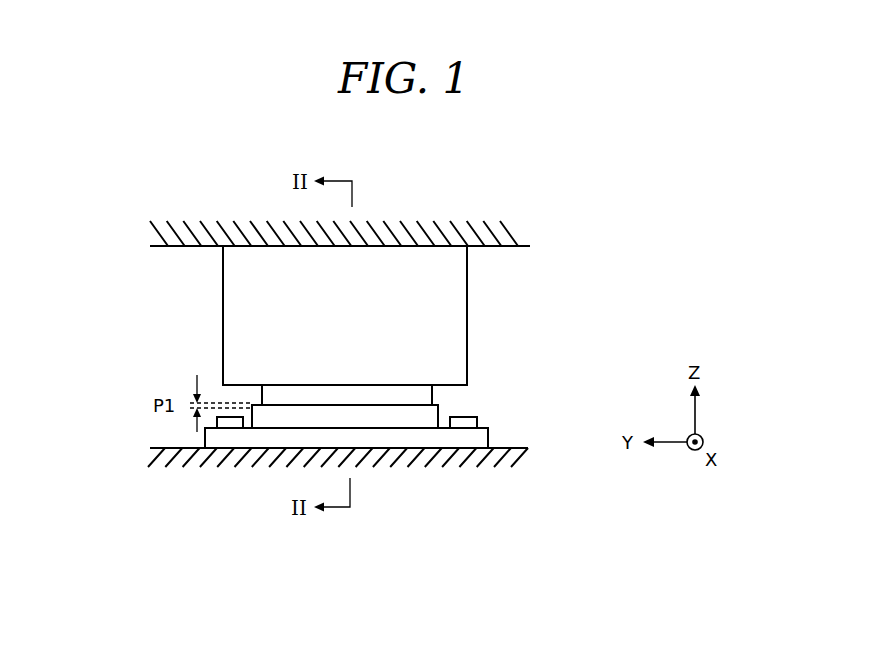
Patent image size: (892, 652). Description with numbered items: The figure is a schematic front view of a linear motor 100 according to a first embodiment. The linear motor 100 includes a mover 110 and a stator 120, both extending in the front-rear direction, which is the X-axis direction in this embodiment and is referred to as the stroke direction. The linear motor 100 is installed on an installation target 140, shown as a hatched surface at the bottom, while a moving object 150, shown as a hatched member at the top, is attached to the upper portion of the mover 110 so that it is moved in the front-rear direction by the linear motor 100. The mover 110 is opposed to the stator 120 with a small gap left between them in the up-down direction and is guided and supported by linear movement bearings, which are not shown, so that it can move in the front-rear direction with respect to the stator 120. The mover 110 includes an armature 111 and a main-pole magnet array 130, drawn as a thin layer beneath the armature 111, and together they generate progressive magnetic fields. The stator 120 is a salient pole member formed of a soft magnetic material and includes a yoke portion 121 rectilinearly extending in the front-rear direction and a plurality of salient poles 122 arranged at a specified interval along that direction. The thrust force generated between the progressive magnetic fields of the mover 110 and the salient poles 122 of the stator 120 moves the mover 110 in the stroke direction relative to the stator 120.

The linear motor 100 is at (583, 260).
The mover 110 is at (415, 325).
The armature 111 is at (445, 302).
The stator 120 is at (389, 470).
The yoke portion 121 is at (378, 438).
The salient poles 122 is at (403, 418).
The main-pole magnet array 130 is at (420, 395).
The installation target 140 is at (158, 448).
The moving object 150 is at (497, 230).